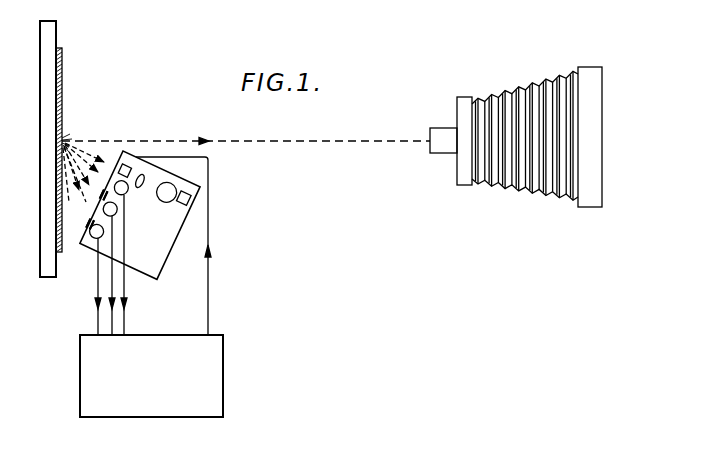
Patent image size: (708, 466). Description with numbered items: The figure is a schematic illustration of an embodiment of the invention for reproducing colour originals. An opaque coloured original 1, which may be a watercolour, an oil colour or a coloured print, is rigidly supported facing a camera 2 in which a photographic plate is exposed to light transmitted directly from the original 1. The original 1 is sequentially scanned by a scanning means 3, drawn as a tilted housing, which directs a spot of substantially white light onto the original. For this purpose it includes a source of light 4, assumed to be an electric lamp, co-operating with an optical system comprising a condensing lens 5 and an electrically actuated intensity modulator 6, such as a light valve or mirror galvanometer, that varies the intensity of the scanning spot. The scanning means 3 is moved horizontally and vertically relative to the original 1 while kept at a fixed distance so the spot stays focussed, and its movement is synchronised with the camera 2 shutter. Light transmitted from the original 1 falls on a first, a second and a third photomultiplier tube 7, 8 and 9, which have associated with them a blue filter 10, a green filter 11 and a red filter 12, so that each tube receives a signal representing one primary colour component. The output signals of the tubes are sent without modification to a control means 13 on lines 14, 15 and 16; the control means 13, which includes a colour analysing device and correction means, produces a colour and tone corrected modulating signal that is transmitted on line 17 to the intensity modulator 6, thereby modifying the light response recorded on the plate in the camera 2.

The coloured original 1 is at (69, 86).
The camera 2 is at (481, 96).
The scanning means 3 is at (190, 204).
The source of light 4 is at (165, 195).
The condensing lens 5 is at (143, 178).
The intensity modulator 6 is at (126, 165).
The first photomultiplier tube 7 is at (126, 182).
The second photomultiplier tube 8 is at (116, 211).
The third photomultiplier tube 9 is at (103, 234).
The blue filter 10 is at (101, 199).
The green filter 11 is at (108, 194).
The red filter 12 is at (85, 238).
The control means 13 is at (213, 360).
The line 14 is at (124, 291).
The line 15 is at (110, 320).
The line 16 is at (98, 331).
The line 17 is at (208, 243).